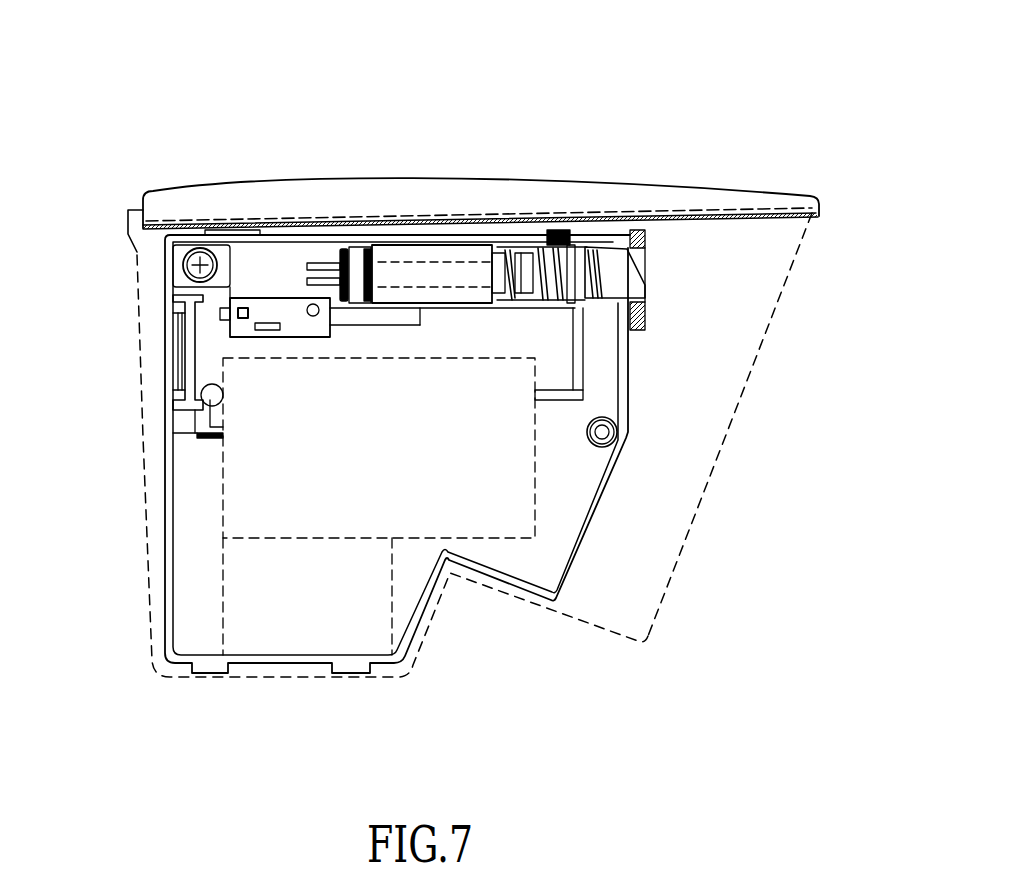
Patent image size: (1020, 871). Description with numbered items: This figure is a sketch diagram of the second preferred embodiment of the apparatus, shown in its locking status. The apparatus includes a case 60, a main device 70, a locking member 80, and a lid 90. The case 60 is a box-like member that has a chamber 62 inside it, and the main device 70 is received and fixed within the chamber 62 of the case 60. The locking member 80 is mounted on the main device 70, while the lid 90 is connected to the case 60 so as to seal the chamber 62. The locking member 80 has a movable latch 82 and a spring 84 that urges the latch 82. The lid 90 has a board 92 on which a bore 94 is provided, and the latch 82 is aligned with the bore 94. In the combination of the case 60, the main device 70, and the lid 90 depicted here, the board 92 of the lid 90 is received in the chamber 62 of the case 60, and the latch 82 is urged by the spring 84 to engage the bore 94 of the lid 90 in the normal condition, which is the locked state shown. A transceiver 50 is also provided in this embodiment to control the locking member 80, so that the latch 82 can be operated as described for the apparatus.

The transceiver 50 is at (272, 307).
The case 60 is at (672, 575).
The chamber 62 is at (663, 487).
The main device 70 is at (150, 530).
The locking member 80 is at (487, 238).
The latch 82 is at (612, 268).
The spring 84 is at (548, 245).
The lid 90 is at (330, 193).
The board 92 is at (645, 323).
The bore 94 is at (645, 262).